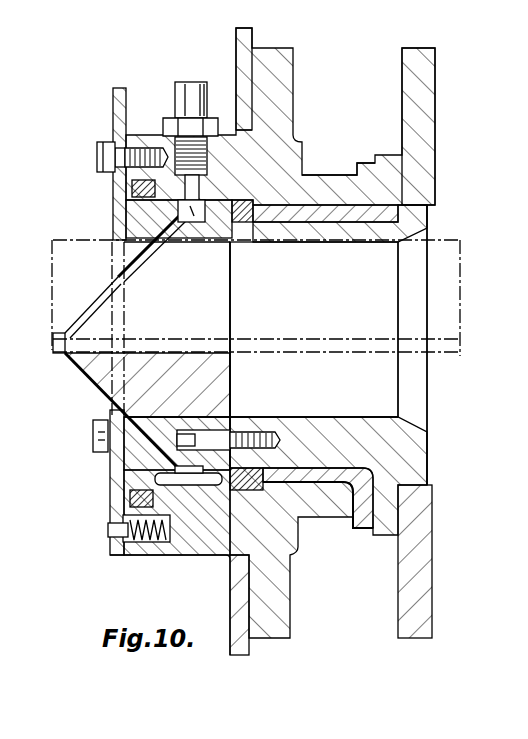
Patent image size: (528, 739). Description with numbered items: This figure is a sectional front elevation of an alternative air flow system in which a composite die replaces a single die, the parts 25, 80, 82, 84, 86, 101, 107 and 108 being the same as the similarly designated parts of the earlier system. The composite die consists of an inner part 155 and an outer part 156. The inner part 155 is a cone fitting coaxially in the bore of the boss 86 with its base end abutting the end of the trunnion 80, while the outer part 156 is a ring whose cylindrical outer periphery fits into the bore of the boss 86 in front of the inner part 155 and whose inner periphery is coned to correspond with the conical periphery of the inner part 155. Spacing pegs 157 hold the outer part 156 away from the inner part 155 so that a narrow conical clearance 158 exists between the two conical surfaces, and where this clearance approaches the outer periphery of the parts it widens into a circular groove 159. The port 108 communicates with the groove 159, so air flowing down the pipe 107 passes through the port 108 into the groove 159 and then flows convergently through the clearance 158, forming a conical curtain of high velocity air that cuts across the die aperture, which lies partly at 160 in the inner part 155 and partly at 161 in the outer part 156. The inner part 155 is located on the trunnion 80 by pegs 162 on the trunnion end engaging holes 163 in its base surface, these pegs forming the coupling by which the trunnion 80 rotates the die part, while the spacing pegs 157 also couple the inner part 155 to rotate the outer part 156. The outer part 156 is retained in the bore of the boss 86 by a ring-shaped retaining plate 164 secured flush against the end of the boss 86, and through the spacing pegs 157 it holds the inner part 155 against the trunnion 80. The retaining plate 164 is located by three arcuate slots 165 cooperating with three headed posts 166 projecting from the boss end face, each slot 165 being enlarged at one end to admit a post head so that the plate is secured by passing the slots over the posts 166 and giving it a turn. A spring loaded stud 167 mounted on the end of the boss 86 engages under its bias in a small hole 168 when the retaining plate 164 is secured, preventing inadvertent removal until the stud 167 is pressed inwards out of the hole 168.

The part 25 is at (410, 97).
The trunnion 80 is at (403, 442).
The part 82 is at (357, 167).
The part 84 is at (236, 63).
The boss 86 is at (276, 149).
The part 101 is at (314, 329).
The pipe 107 is at (174, 86).
The port 108 is at (193, 182).
The inner part 155 is at (222, 370).
The outer part 156 is at (137, 463).
The spacing pegs 157 is at (187, 490).
The conical clearance 158 is at (160, 223).
The circular groove 159 is at (194, 223).
The aperture portion 160 is at (141, 342).
The aperture portion 161 is at (128, 253).
The pegs 162 is at (225, 428).
The holes 163 is at (220, 400).
The retaining plate 164 is at (118, 502).
The arcuate slots 165 is at (118, 136).
The headed posts 166 is at (96, 153).
The spring loaded stud 167 is at (115, 525).
The hole 168 is at (106, 538).